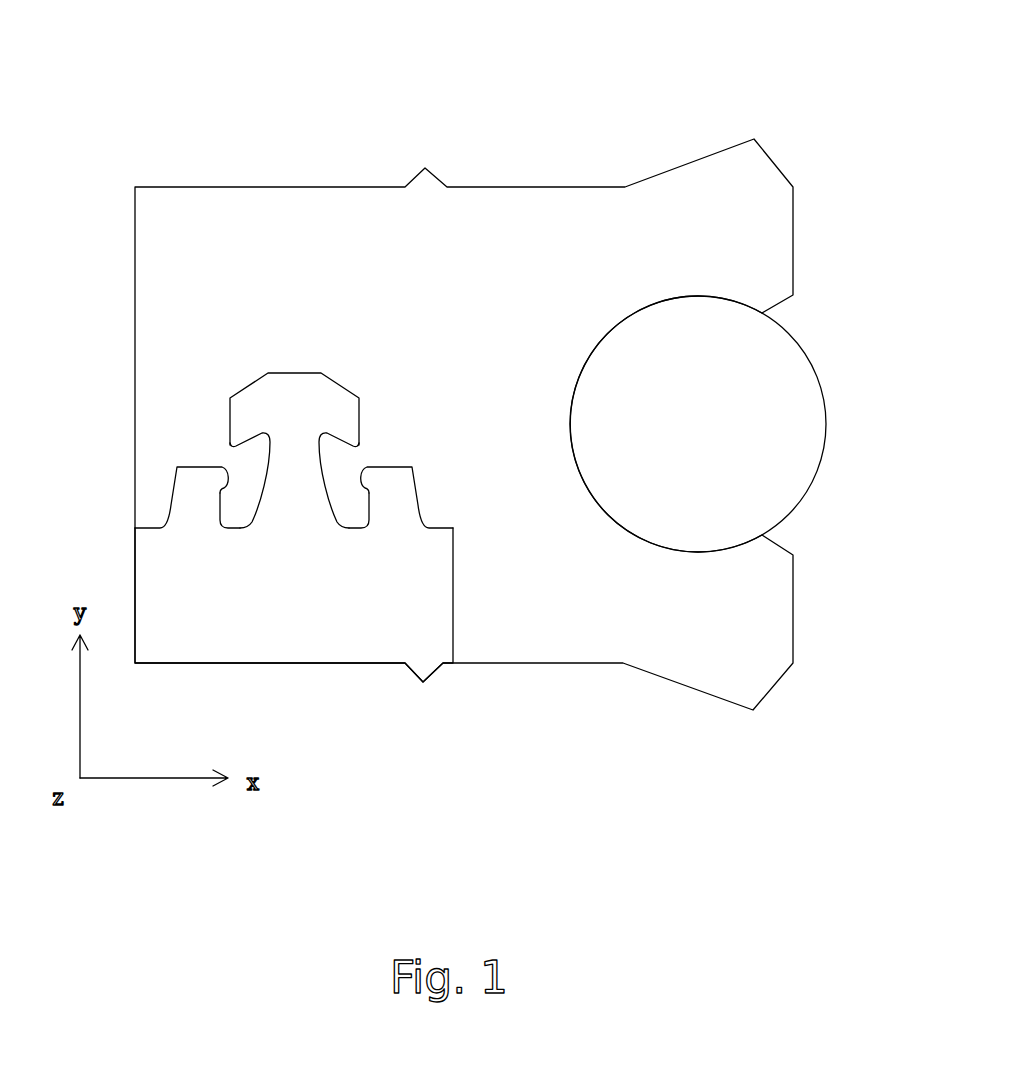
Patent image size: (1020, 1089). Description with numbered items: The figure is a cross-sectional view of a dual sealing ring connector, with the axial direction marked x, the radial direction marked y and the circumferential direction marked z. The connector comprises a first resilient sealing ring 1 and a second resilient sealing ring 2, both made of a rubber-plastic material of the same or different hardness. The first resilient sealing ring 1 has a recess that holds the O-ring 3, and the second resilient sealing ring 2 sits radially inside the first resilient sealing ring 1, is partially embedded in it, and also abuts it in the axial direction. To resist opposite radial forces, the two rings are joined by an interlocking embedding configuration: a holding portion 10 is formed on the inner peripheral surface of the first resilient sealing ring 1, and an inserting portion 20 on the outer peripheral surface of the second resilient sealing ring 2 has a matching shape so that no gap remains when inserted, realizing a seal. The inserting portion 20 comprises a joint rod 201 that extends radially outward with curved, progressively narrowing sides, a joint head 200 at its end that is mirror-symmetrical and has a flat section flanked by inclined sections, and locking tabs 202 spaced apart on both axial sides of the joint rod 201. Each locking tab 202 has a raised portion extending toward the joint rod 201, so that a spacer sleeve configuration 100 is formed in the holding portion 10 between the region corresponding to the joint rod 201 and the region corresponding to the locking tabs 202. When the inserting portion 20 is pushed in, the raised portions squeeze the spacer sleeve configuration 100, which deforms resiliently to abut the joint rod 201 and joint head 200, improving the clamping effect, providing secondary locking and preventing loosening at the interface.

The first resilient sealing ring 1 is at (233, 250).
The second resilient sealing ring 2 is at (400, 628).
The O-ring 3 is at (745, 398).
The holding portion 10 is at (210, 448).
The spacer sleeve configuration 100 is at (337, 468).
The inserting portion 20 is at (392, 508).
The joint head 200 is at (291, 395).
The joint rod 201 is at (292, 492).
The locking tabs 202 is at (195, 512).